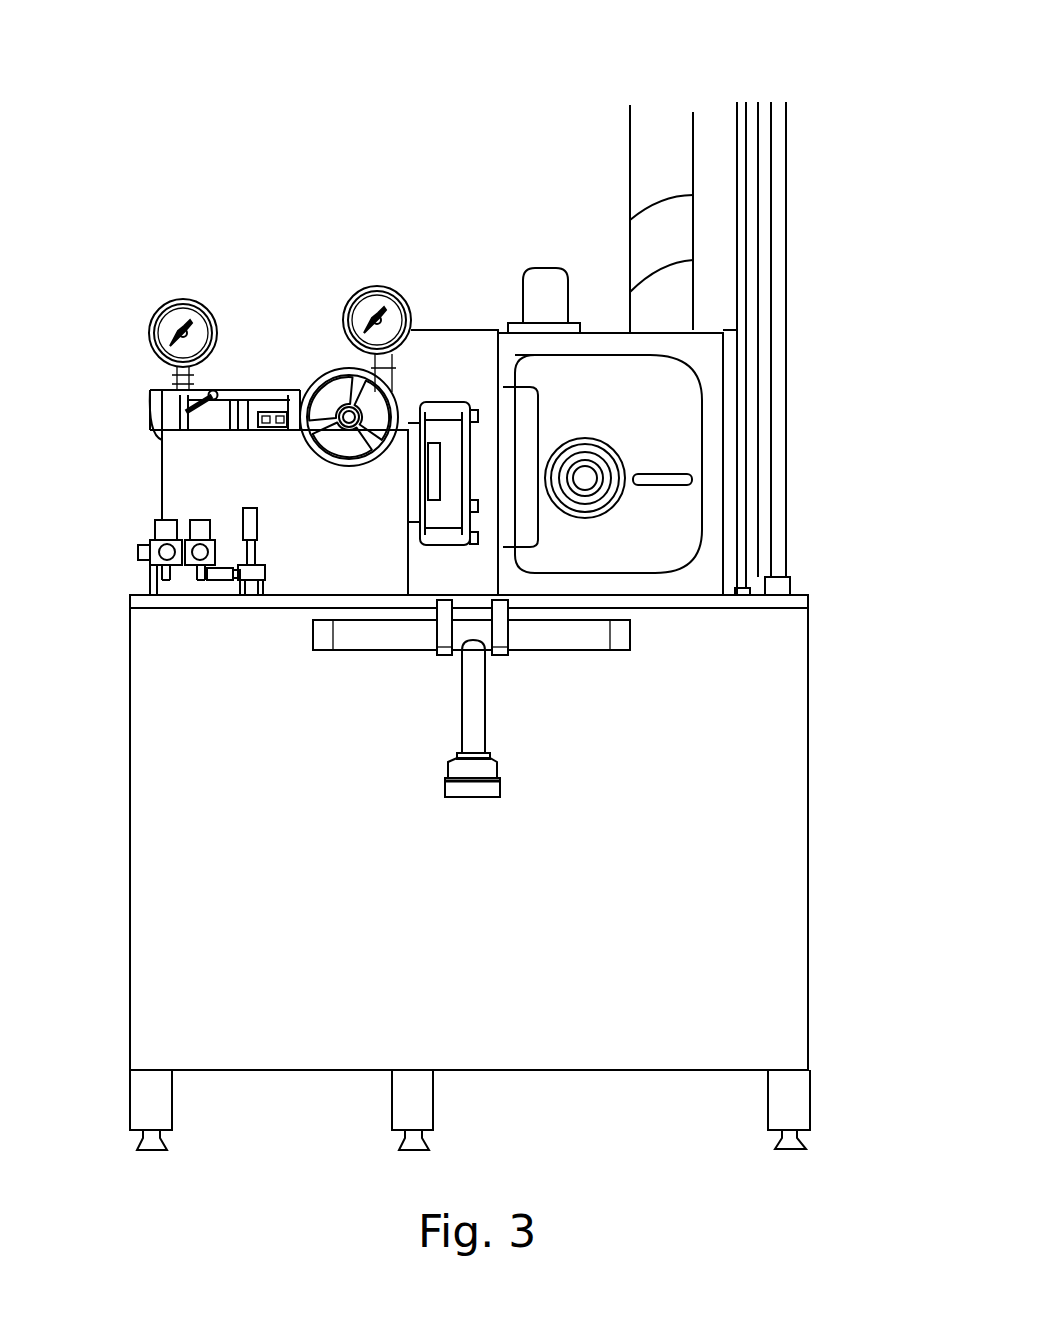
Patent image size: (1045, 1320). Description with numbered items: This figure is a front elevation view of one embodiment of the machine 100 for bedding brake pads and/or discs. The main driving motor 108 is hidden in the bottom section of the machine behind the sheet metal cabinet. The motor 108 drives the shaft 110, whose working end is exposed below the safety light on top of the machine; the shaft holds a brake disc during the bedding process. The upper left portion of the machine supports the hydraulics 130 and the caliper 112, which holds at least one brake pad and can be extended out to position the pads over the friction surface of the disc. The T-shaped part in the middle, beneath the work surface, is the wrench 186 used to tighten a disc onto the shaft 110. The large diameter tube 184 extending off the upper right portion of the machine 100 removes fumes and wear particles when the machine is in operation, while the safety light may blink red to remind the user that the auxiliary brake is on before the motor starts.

The machine 100 is at (229, 138).
The motor 108 is at (100, 773).
The shaft 110 is at (585, 478).
The caliper 112 is at (461, 372).
The hydraulics 130 is at (130, 473).
The large diameter tube 184 is at (655, 115).
The wrench 186 is at (418, 754).